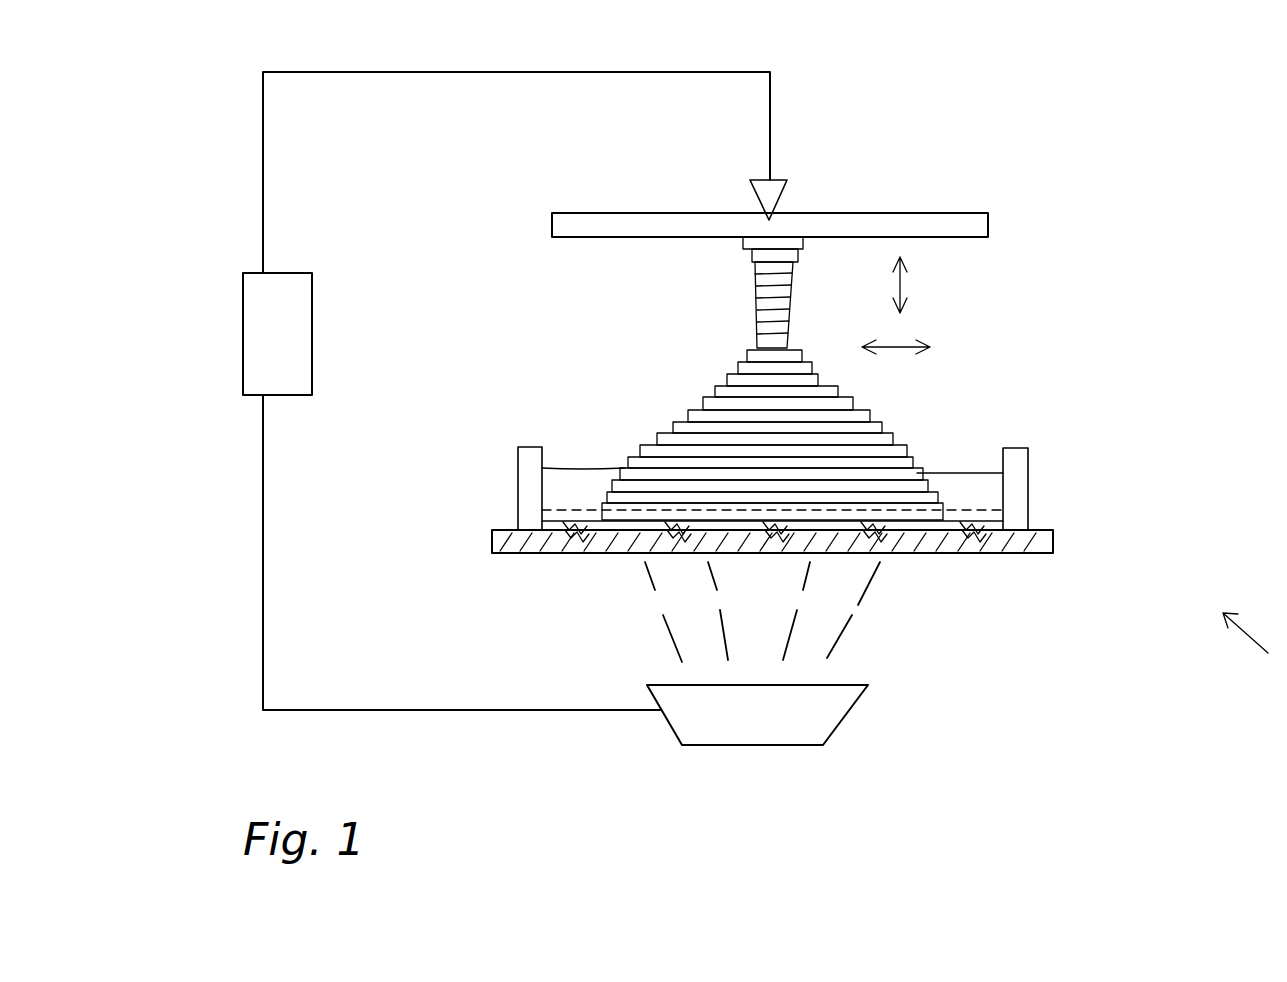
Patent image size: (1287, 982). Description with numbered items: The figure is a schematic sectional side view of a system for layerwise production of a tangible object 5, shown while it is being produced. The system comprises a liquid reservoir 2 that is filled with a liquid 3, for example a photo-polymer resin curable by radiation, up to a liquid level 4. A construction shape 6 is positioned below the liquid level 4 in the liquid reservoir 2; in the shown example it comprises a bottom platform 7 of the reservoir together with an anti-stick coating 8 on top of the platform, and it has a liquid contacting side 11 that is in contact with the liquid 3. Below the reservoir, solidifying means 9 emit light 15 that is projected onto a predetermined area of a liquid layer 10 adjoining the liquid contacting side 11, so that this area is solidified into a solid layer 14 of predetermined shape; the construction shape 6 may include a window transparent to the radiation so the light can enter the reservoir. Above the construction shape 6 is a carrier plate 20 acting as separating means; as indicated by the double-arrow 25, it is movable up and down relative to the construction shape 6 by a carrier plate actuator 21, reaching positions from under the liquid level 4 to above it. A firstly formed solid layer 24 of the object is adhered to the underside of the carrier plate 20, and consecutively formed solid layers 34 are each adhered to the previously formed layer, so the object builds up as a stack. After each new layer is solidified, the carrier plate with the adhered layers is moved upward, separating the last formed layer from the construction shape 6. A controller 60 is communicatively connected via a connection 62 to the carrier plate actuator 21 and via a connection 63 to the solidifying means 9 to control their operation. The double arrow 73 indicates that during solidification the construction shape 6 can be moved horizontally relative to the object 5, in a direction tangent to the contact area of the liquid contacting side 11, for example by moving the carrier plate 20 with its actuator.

The liquid reservoir 2 is at (816, 558).
The liquid 3 is at (798, 523).
The liquid level 4 is at (962, 473).
The tangible object 5 is at (906, 446).
The construction shape 6 is at (772, 593).
The bottom platform 7 is at (1000, 518).
The anti-stick coating 8 is at (938, 527).
The solidifying means 9 is at (732, 730).
The liquid layer 10 is at (552, 512).
The liquid contacting side 11 is at (588, 518).
The solid layer 14 is at (634, 508).
The light 15 is at (847, 635).
The carrier plate 20 is at (855, 223).
The carrier plate actuator 21 is at (785, 188).
The firstly formed solid layer 24 is at (745, 240).
The double-arrow 25 is at (900, 290).
The consecutively formed solid layers 34 is at (768, 308).
The controller 60 is at (273, 335).
The connection 62 is at (263, 123).
The connection 63 is at (260, 522).
The double arrow 73 is at (903, 350).